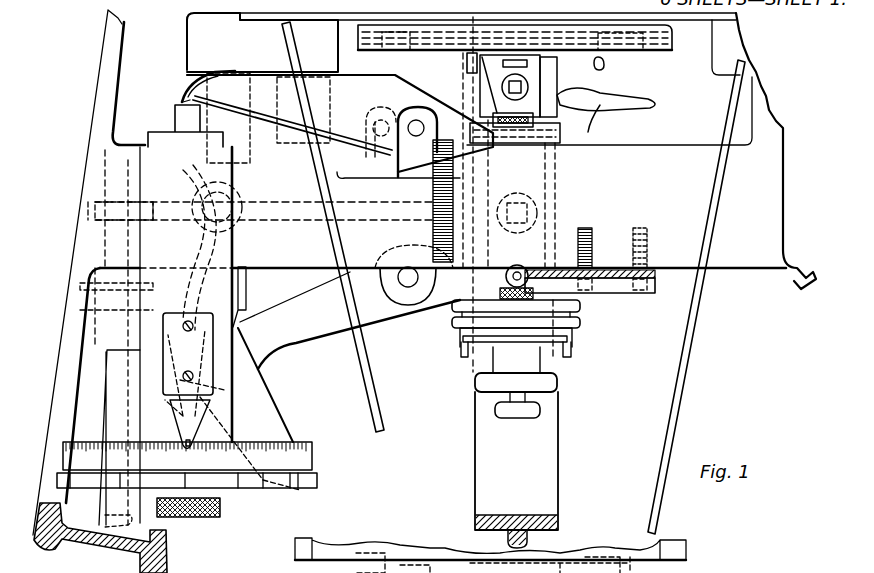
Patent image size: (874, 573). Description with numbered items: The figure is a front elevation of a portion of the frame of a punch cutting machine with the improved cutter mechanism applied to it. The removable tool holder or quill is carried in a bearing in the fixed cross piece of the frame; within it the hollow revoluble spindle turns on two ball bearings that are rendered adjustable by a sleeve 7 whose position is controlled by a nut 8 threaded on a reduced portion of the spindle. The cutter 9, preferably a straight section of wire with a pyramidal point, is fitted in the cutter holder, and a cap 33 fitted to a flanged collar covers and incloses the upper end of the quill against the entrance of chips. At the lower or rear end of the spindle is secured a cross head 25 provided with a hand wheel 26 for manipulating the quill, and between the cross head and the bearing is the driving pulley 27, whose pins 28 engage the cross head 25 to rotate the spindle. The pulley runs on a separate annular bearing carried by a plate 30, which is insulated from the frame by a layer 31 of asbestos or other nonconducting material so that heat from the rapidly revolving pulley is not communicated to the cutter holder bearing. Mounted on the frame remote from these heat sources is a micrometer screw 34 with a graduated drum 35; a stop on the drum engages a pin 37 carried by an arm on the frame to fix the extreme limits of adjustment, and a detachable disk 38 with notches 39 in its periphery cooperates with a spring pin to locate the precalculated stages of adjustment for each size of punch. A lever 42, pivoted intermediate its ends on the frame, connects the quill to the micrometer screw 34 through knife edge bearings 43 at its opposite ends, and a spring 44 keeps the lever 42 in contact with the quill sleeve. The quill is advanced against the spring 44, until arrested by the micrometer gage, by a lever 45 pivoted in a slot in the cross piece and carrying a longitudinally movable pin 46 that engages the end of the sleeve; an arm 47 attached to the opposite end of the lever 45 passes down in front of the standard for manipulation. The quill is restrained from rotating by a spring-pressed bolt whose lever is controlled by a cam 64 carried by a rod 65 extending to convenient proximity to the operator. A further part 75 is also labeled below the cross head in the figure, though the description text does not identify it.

The sleeve 7 is at (651, 233).
The nut 8 is at (544, 277).
The cutter 9 is at (515, 122).
The cross head 25 is at (490, 348).
The hand wheel 26 is at (482, 394).
The driving pulley 27 is at (579, 322).
The pins 28 is at (462, 346).
The plate 30 is at (649, 294).
The layer of asbestos 31 is at (658, 268).
The cap 33 is at (566, 138).
The micrometer screw 34 is at (170, 127).
The graduated drum 35 is at (300, 461).
The pin 37 is at (198, 437).
The disk 38 is at (254, 489).
The notches 39 is at (312, 487).
The lever 42 is at (340, 227).
The knife edge bearings 43 is at (287, 117).
The spring 44 is at (445, 168).
The lever 45 is at (320, 330).
The pin 46 is at (518, 266).
The arm 47 is at (140, 512).
The cam 64 is at (131, 200).
The rod 65 is at (115, 312).
The piston 75 is at (520, 404).